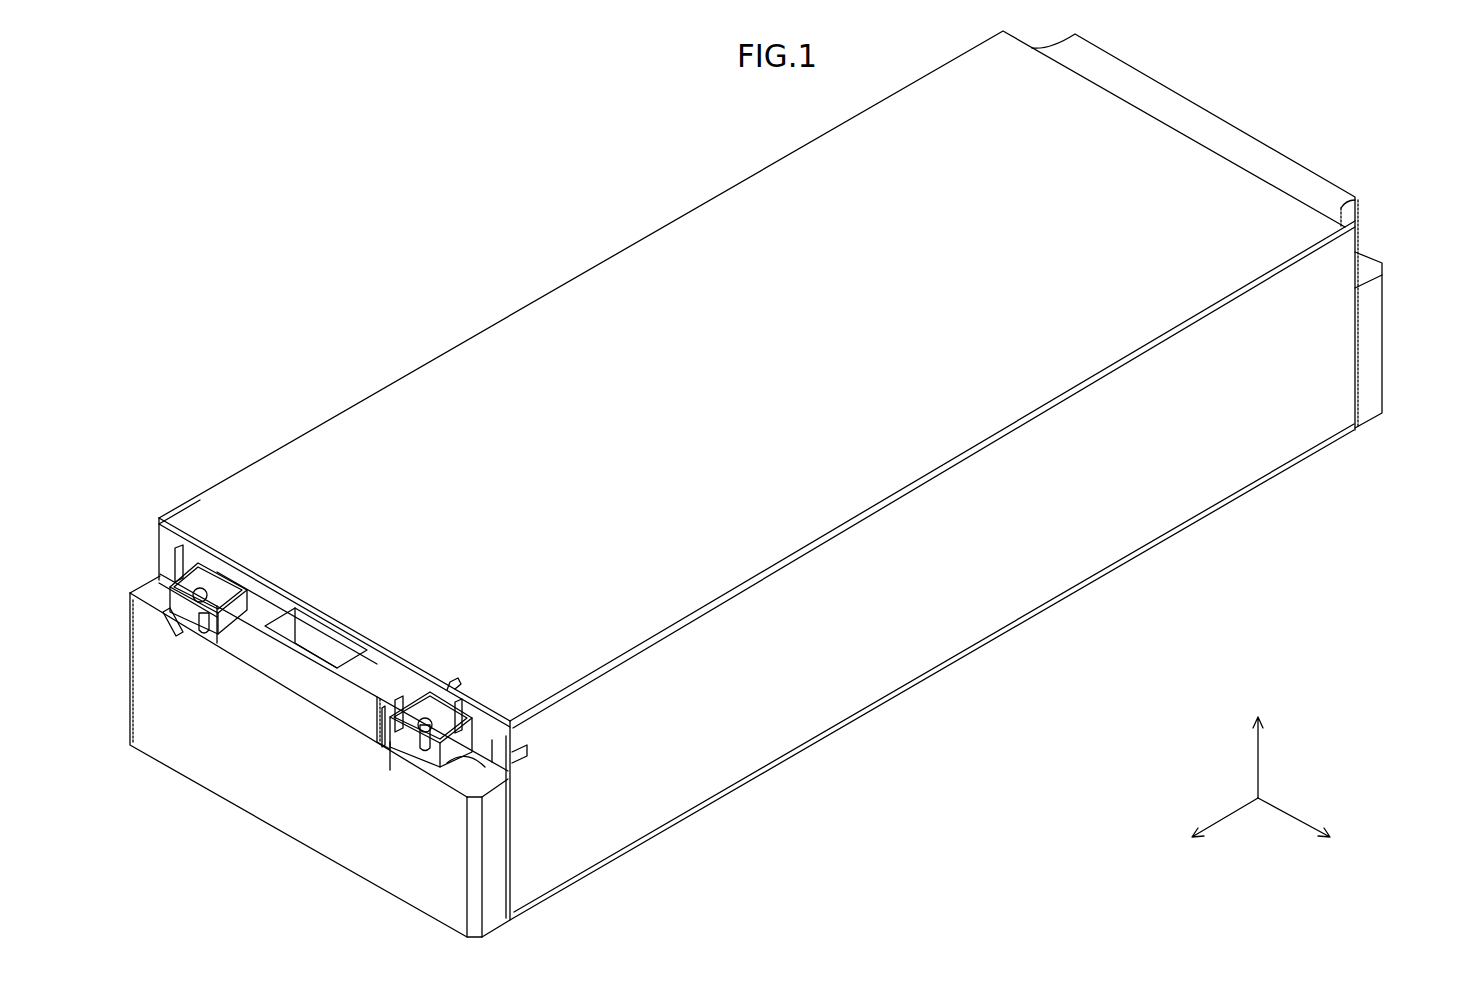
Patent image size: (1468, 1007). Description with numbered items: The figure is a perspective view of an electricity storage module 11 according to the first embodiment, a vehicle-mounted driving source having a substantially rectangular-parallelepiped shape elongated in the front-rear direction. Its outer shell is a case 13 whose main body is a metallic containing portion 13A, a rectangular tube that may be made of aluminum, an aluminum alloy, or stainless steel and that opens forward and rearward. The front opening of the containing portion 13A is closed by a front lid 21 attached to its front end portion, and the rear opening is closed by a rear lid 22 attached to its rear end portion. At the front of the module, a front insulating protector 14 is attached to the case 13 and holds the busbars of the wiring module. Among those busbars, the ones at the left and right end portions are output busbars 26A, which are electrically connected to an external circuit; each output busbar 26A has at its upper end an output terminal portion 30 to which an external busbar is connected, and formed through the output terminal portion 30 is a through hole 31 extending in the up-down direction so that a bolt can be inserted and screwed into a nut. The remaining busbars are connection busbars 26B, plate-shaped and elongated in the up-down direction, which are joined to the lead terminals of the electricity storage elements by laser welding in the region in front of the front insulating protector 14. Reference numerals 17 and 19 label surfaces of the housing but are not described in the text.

The electricity storage module 11 is at (563, 132).
The case 13 is at (793, 484).
The containing portion 13A is at (1328, 513).
The front insulating protector 14 is at (170, 583).
The side plate 17 is at (1078, 548).
The top plate 19 is at (1013, 392).
The front lid 21 is at (239, 752).
The rear lid 22 is at (1372, 330).
The output busbar 26A is at (173, 601).
The connection busbar 26B is at (382, 750).
The output terminal portion 30 is at (205, 585).
The through hole 31 is at (183, 583).